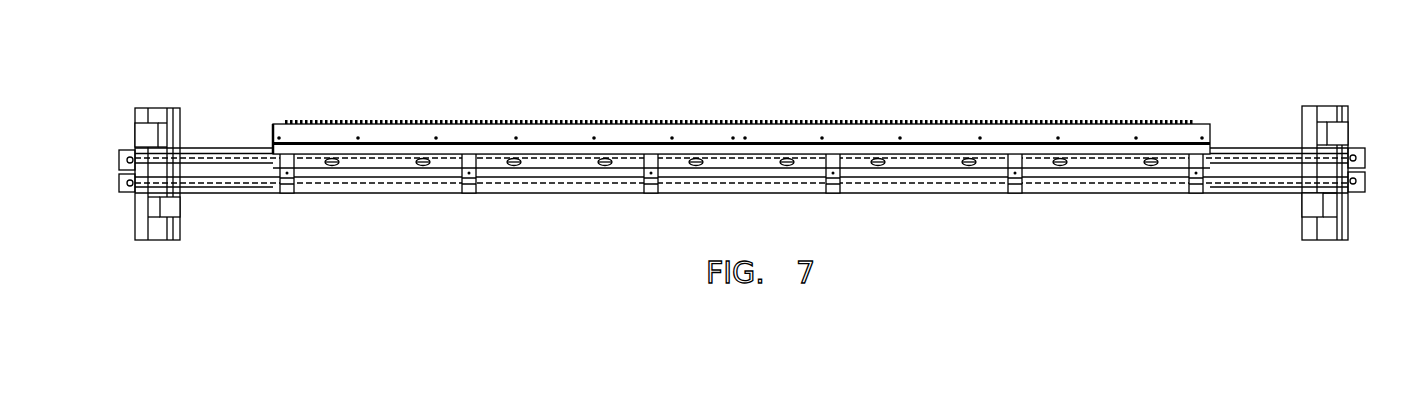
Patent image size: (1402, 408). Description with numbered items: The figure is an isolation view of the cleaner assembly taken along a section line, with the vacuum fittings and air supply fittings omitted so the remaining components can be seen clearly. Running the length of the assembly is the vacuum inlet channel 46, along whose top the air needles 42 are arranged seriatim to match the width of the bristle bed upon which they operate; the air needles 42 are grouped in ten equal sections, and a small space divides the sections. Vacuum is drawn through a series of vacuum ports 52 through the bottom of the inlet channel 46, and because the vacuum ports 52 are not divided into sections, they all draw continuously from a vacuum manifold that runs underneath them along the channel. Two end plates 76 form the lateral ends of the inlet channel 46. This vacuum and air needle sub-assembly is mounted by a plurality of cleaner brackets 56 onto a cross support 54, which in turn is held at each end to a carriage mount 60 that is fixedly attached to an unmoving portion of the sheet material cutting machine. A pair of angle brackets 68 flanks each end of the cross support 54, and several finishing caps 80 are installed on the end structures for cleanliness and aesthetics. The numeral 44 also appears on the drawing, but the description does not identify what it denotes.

The air needles 42 is at (910, 123).
The blade edge 44 is at (1075, 136).
The inlet channel 46 is at (918, 150).
The vacuum ports 52 is at (695, 166).
The cross support 54 is at (1225, 187).
The cleaner brackets 56 is at (475, 175).
The carriage mounts 60 is at (177, 120).
The angle brackets 68 is at (160, 140).
The end plates 76 is at (297, 93).
The finishing caps 80 is at (135, 148).